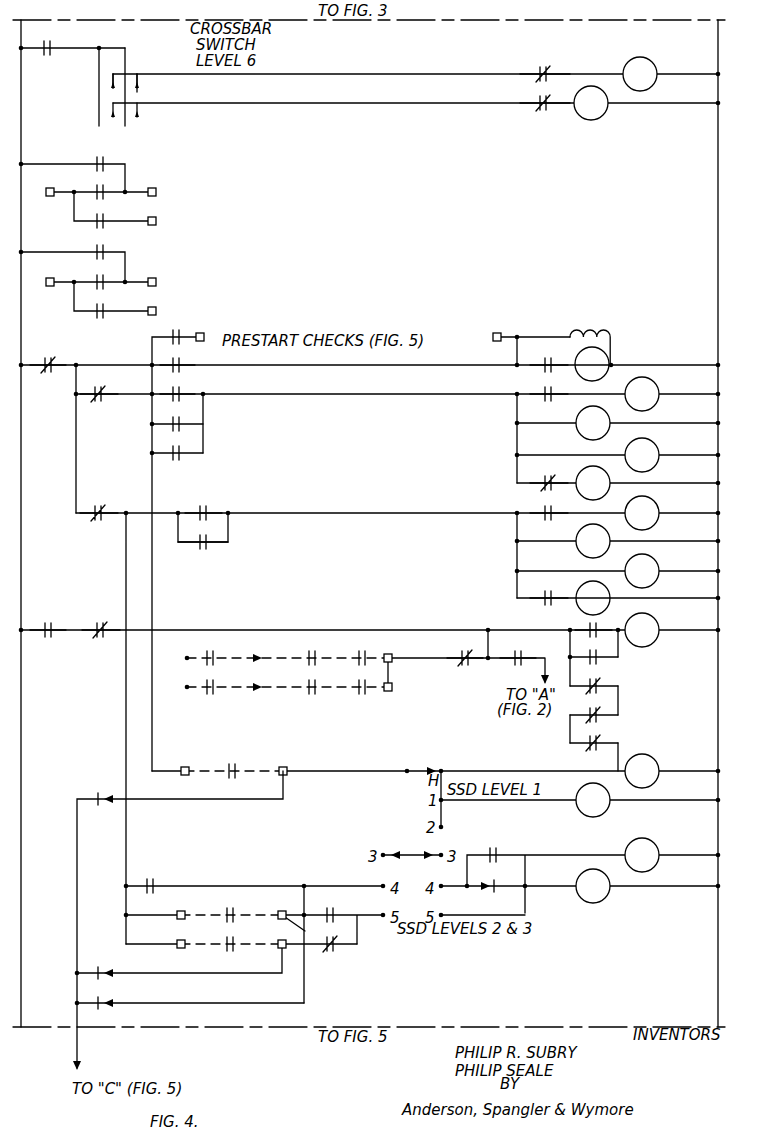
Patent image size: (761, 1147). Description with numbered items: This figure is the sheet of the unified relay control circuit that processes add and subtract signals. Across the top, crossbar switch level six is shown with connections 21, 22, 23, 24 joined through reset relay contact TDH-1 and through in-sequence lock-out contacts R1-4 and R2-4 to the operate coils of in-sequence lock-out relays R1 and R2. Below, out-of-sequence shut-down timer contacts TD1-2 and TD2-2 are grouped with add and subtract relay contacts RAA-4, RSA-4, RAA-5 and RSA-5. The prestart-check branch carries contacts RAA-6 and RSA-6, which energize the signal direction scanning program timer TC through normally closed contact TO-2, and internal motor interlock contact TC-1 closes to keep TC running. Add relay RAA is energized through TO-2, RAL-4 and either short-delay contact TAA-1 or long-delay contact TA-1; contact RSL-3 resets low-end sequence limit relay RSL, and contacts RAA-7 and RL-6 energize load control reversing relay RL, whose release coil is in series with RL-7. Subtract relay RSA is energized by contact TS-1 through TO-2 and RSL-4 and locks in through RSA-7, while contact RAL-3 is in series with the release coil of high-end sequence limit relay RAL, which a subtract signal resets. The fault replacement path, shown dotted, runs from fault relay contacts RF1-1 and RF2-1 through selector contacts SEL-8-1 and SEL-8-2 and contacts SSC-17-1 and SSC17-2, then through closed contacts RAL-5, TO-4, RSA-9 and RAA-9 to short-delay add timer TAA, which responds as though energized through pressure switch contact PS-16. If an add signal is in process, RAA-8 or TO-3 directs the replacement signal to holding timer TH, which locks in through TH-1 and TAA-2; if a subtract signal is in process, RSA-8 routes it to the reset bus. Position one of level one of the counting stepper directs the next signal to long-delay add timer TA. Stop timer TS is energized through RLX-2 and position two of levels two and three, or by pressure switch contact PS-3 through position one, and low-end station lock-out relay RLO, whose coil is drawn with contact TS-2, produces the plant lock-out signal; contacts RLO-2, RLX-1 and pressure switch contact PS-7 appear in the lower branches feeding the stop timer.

The crossbar switch select magnet 21 is at (95, 87).
The crossbar switch contact 22 is at (414, 72).
The crossbar switch contact 23 is at (136, 88).
The crossbar switch contact 24 is at (414, 117).
The contact of reset relay TDH TDH-1 is at (73, 54).
The contact of in-sequence lock-out relay R1 R1-4 is at (535, 81).
The contact of in-sequence lock-out relay R2 R2-4 is at (541, 110).
The in-sequence lock-out relay R1 is at (640, 74).
The in-sequence lock-out relay R2 is at (591, 103).
The contact of out-of-sequence shut-down time delay relay TD1 TD1-2 is at (73, 174).
The contact of out-of-sequence shut-down time delay relay TD2 TD2-2 is at (73, 263).
The contact of starting control relay RAA RAA-4 is at (101, 199).
The contact of stopping control relay RSA RSA-4 is at (115, 218).
The contact of starting control relay RAA RAA-5 is at (101, 289).
The contact of stopping control relay RSA RSA-5 is at (115, 308).
The contact of starting control relay RAA RAA-6 is at (178, 347).
The contact of stopping control relay RSA RSA-6 is at (177, 373).
The contact of in-cycle lock-out time delay relay TO TO-2 is at (46, 373).
The internal motor interlock contact of timer TC TC-1 is at (547, 373).
The signal direction scanning program timer TC is at (590, 355).
The contact of high-end sequence limit relay RAL RAL-4 is at (100, 402).
The contact of starting control relay RAA RAA-7 is at (177, 401).
The contact of engine start short time delay relay TAA TAA-1 is at (177, 431).
The contact of engine start long time delay relay TA TA-1 is at (177, 461).
The contact of low-end sequence limit relay RSL RSL-3 is at (546, 402).
The low-end sequence limit relay RSL is at (642, 394).
The starting control relay RAA is at (617, 439).
The contact of load control solenoid reversing relay RL RL-6 is at (547, 490).
The load control solenoid reversing relay RL is at (593, 540).
The contact of low-end sequence limit relay RSL RSL-4 is at (98, 521).
The contact of stopping control relay RSA RSA-7 is at (203, 521).
The contact of engine stop long time delay relay TS TS-1 is at (203, 550).
The contact of high-end sequence limit relay RAL RAL-3 is at (546, 522).
The high-end sequence limit relay RAL is at (642, 513).
The stopping control relay RSA is at (617, 556).
The contact of load control solenoid reversing relay RL RL-7 is at (548, 606).
The contact of failure replacement signal holding time delay relay TH TH-1 is at (46, 638).
The contact of engine start short time delay relay TAA TAA-2 is at (98, 638).
The contact of starting control relay RAA RAA-8 is at (594, 637).
The failure replacement signal holding time delay relay TH is at (642, 630).
The contact of in-cycle lock-out time delay relay TO TO-3 is at (594, 664).
The contact of in-cycle lock-out time delay relay TO TO-4 is at (594, 692).
The contact of stopping control relay RSA RSA-9 is at (594, 721).
The contact of starting control relay RAA RAA-9 is at (592, 749).
The contact of fault relay RF1 RF1-1 is at (212, 665).
The contact of fault relay RF2 RF2-1 is at (212, 694).
The contact of manually operated selector switch SEL SEL-8-1 is at (311, 665).
The contact of manually operated selector switch SEL SEL-8-2 is at (311, 694).
The SSC relay contact SSC-17-1 is at (377, 650).
The SSC relay contact SSC17-2 is at (374, 694).
The contact of high-end sequence limit relay RAL RAL-5 is at (456, 665).
The contact of stopping control relay RSA RSA-8 is at (516, 665).
The contact of control signal pressure switch PS PS-16 is at (231, 779).
The engine start short time delay relay TAA is at (642, 771).
The engine start long time delay relay TA is at (593, 800).
The contact of engine stop long time delay relay TS TS-2 is at (495, 863).
The low-end sequence station lock-out relay RLO is at (642, 855).
The contact of low-end sequence station lock-out relay RLO RLO-2 is at (155, 893).
The engine stop long time delay relay TS is at (593, 886).
The contact of control signal pressure switch PS PS-3 is at (227, 922).
The contact of load control signal directing relay RLX RLX-1 is at (333, 922).
The contact of control signal pressure switch PS PS-7 is at (227, 951).
The contact of load control signal directing relay RLX RLX-2 is at (333, 951).